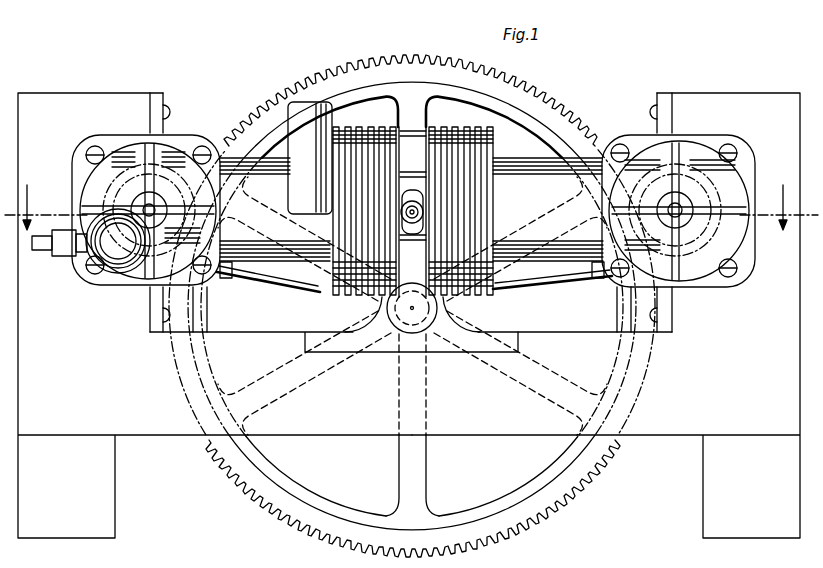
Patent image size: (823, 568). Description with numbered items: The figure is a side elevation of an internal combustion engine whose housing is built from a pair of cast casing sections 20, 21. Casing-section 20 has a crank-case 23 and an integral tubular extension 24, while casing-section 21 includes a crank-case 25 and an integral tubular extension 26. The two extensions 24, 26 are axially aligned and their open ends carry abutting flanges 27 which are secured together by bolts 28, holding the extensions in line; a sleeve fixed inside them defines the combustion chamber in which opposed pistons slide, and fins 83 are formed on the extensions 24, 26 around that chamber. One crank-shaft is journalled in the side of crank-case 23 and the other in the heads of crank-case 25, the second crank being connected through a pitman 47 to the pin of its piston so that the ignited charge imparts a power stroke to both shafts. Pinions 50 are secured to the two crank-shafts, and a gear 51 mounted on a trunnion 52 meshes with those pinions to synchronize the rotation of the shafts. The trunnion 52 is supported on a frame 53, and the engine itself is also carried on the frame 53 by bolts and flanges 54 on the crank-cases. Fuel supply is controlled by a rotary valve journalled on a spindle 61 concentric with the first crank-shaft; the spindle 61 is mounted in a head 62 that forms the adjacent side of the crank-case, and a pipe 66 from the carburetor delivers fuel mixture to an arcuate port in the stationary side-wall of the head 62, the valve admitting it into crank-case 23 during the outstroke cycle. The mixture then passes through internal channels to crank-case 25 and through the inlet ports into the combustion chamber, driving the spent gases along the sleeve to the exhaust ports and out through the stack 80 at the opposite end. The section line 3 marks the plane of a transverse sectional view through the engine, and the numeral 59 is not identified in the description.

The section line 3- 3 is at (411, 207).
The casing-section 20 is at (250, 248).
The casing-section 21 is at (518, 218).
The crank-case 23 is at (76, 175).
The tubular extension 24 is at (298, 250).
The crank-case 25 is at (692, 142).
The tubular extension 26 is at (506, 170).
The abutting flanges 27 is at (428, 128).
The bolts 28 is at (410, 128).
The pitman 47 is at (606, 315).
The pinions 50 is at (128, 168).
The gear 51 is at (346, 63).
The trunnion 52 is at (405, 336).
The frame 53 is at (268, 315).
The bolts and flanges 54 is at (170, 118).
The screw 59 is at (663, 316).
The spindle 61 is at (142, 204).
The head 62 is at (188, 296).
The pipe 66 is at (120, 272).
The stack 80 is at (310, 158).
The fins 83 is at (480, 296).